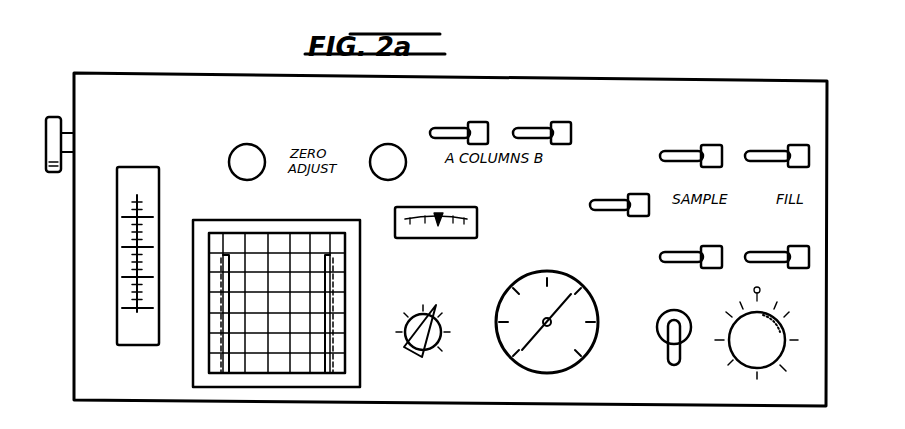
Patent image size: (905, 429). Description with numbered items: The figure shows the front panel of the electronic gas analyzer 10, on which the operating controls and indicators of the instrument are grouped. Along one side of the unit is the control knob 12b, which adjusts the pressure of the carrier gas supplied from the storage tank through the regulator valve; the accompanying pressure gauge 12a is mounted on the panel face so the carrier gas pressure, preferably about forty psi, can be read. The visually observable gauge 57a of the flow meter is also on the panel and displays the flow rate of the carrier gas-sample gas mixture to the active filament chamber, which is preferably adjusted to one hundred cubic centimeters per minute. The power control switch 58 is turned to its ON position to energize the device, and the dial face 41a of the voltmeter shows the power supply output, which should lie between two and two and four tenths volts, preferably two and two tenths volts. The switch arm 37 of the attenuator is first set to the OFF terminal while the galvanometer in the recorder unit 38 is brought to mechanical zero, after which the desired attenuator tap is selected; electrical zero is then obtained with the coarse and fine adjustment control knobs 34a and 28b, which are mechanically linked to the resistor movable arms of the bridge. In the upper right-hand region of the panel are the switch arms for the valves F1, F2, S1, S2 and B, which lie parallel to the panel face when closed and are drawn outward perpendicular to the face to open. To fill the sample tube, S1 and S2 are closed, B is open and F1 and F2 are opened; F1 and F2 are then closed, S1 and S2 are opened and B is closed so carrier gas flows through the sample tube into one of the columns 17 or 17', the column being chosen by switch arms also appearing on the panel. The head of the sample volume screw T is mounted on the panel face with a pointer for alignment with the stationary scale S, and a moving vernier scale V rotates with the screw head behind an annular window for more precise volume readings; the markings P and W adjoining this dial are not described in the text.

The analyzer 10 is at (722, 46).
The control knob 12b is at (52, 172).
The visually observable gauge 57a is at (153, 158).
The coarse adjustment control knob 34a is at (229, 160).
The fine adjustment control knob 28b is at (400, 176).
The column 17 is at (459, 121).
The column 17' is at (548, 121).
The dial face 41a is at (478, 218).
The recorder unit 38 is at (193, 368).
The switch arm 37 is at (419, 353).
The pressure gauge 12a is at (592, 292).
The power control switch 58 is at (658, 332).
The first valve S1 is at (718, 146).
The fill valve F1 is at (800, 146).
The bypass valve B is at (631, 196).
The sample valve S2 is at (730, 232).
The fill valve F2 is at (808, 232).
The selector dial position P is at (752, 318).
The selector dial position W is at (778, 308).
The moving vernier scale V is at (792, 323).
The screw T is at (792, 347).
The stationary scale S is at (773, 364).